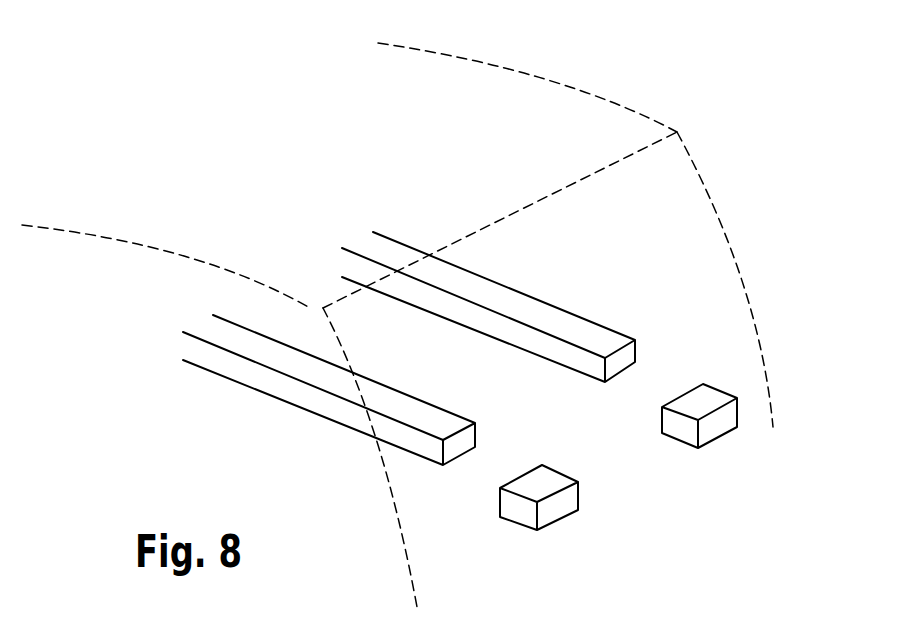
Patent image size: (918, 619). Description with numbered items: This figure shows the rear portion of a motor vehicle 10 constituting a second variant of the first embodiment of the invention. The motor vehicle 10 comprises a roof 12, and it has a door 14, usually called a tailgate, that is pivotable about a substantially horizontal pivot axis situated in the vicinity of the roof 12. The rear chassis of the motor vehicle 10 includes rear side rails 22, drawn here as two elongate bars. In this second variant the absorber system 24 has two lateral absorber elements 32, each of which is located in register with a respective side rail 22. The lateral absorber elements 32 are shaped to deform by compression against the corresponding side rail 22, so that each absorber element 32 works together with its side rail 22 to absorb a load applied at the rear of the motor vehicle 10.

The motor vehicle 10 is at (455, 322).
The roof 12 is at (537, 100).
The door 14 is at (690, 193).
The rear side rails 22 is at (538, 317).
The absorber system 24 is at (790, 336).
The lateral absorber elements 32 is at (715, 425).